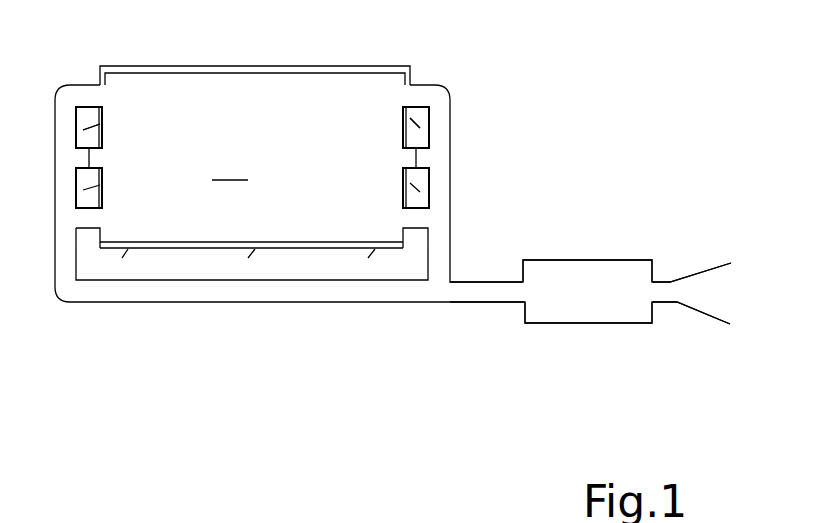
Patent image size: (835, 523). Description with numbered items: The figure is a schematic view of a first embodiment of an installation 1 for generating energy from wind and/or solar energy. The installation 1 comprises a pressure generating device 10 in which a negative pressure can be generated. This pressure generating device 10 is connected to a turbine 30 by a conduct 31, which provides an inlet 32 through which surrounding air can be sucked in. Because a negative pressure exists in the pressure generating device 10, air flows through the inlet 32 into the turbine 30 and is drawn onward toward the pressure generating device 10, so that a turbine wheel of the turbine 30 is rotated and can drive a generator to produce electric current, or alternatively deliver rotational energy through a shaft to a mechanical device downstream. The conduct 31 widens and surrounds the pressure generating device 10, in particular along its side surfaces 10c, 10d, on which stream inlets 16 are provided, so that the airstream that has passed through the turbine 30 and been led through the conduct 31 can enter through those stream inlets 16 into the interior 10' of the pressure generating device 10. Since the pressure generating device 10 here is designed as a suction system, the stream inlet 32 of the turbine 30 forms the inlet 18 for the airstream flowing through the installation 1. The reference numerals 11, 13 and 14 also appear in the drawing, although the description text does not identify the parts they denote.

The installation 1 is at (343, 316).
The pressure generating device 10 is at (324, 191).
The interior 10' is at (230, 167).
The side surface 10c is at (104, 127).
The side surface 10d is at (413, 127).
The cover 11 is at (370, 64).
The element 13 is at (370, 522).
The element 14 is at (205, 522).
The stream inlets 16 is at (97, 100).
The inlet 18 is at (725, 321).
The turbine 30 is at (592, 302).
The conduct 31 is at (455, 300).
The inlet 32 is at (712, 297).